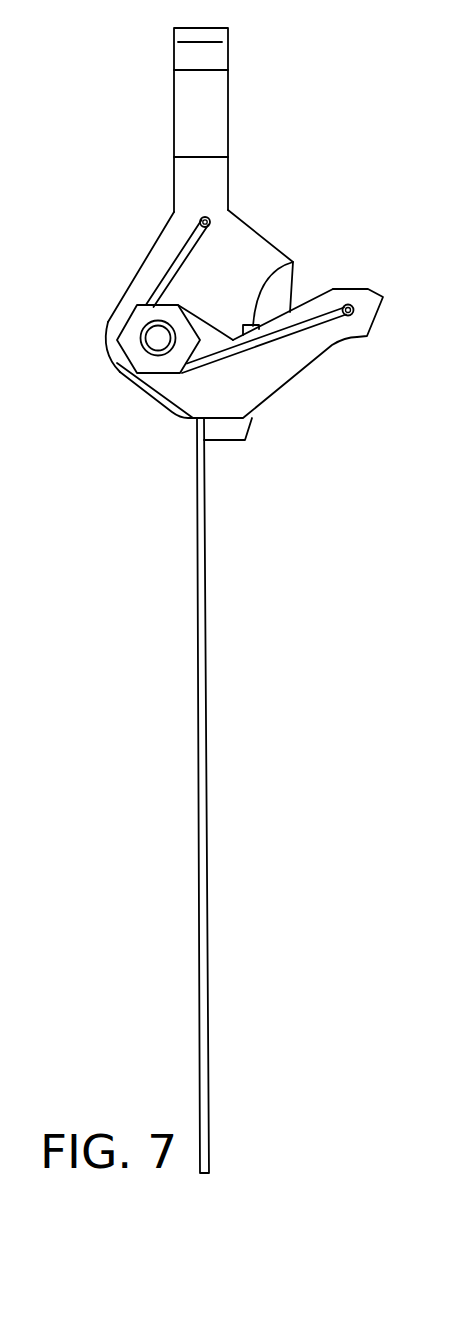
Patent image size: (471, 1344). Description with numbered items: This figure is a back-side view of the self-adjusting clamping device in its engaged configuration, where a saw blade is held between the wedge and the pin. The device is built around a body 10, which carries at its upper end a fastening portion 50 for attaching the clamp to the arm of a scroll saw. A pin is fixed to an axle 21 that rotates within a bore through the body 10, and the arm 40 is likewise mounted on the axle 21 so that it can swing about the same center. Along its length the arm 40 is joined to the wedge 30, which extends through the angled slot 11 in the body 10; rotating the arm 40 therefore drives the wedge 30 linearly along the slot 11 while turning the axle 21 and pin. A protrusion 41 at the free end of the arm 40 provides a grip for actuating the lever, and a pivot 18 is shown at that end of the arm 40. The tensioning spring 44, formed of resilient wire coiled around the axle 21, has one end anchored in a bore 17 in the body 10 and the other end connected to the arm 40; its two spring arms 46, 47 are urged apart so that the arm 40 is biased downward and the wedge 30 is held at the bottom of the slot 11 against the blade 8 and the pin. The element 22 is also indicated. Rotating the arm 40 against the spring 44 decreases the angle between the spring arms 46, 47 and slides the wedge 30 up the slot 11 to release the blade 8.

The needle 8 is at (206, 782).
The body 10 is at (122, 118).
The slot 11 is at (294, 262).
The bore 17 is at (209, 217).
The pivot pin 18 is at (368, 290).
The axle 21 is at (158, 338).
The body lobe 22 is at (138, 357).
The wedge 30 is at (223, 433).
The arm 40 is at (270, 367).
The protrusion 41 is at (377, 313).
The tensioning spring 44 is at (185, 245).
The spring arm 46 is at (317, 329).
The spring arm 47 is at (167, 262).
The fastening portion 50 is at (218, 55).